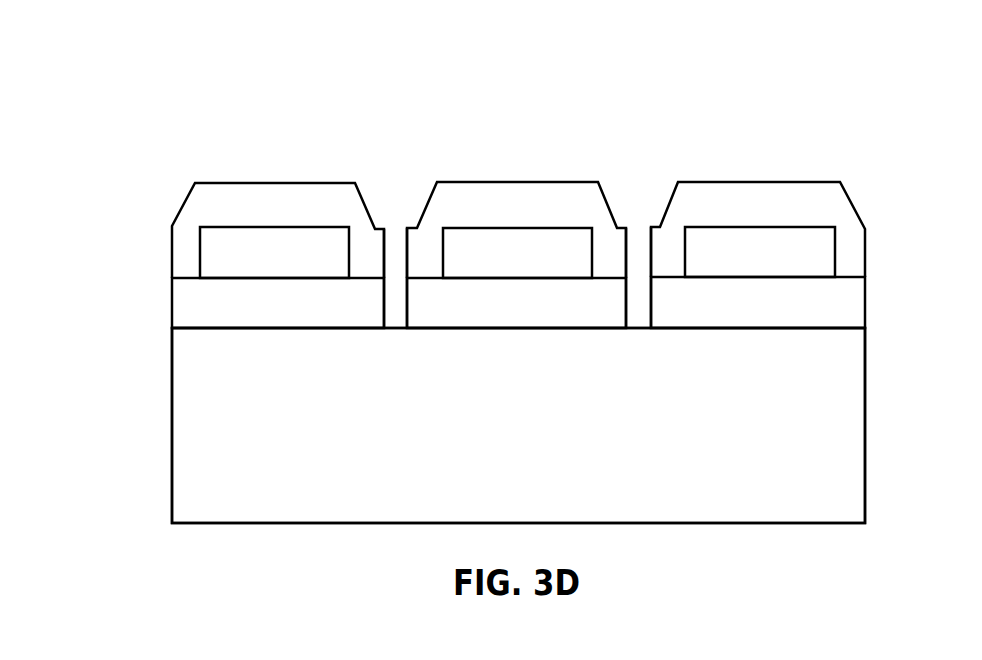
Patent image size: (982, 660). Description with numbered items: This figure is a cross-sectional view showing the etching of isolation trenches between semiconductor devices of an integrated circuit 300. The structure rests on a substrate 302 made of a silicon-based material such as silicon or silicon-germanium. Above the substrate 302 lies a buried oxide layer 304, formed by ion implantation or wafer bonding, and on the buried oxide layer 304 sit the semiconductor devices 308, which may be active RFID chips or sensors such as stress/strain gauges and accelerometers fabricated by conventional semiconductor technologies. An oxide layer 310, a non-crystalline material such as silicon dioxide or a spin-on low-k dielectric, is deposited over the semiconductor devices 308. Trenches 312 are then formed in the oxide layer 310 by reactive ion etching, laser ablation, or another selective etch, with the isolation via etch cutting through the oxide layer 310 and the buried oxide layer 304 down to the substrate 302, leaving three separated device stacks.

The integrated circuit 300 is at (150, 124).
The substrate 302 is at (518, 425).
The buried oxide layer 304 is at (518, 302).
The semiconductor devices 308 is at (517, 252).
The oxide layer 310 is at (518, 230).
The trenches 312 is at (400, 213).